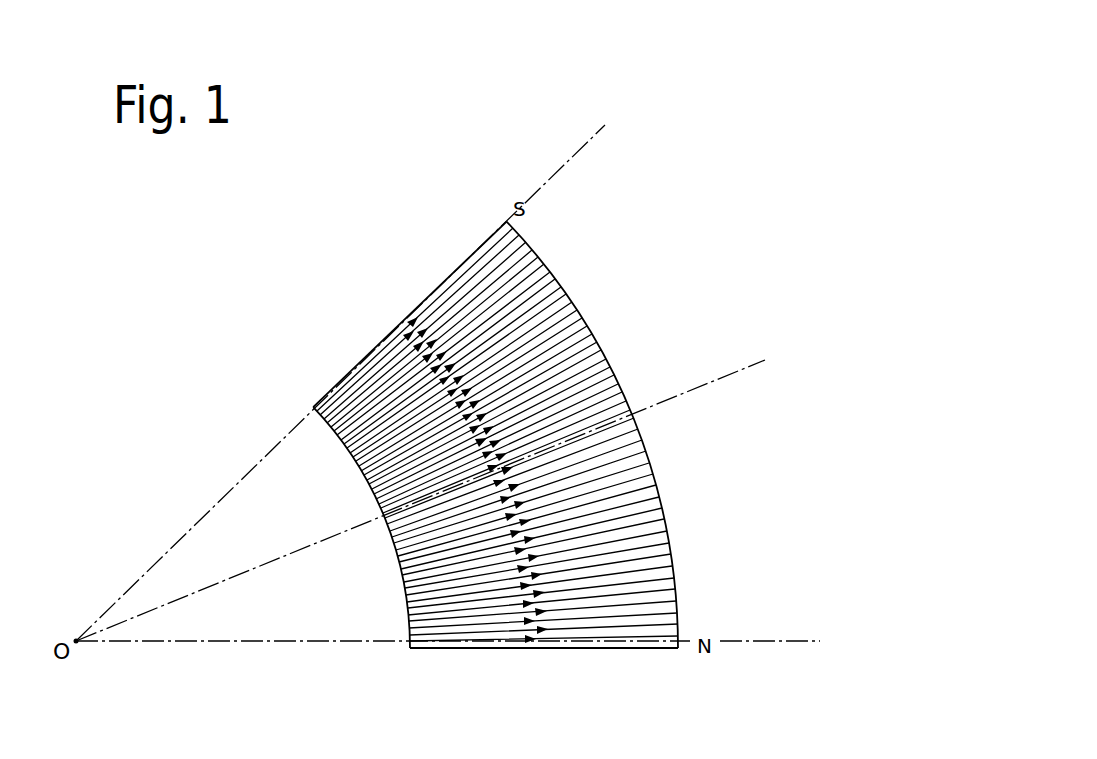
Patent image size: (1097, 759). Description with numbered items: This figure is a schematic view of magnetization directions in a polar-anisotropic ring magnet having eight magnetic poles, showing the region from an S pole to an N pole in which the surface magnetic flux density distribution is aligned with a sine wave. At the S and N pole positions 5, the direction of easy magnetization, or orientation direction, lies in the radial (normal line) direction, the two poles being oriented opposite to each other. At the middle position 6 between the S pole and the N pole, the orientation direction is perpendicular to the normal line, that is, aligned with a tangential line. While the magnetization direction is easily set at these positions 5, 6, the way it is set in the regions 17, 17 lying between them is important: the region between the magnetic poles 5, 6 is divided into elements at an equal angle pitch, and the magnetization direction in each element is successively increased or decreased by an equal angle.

The S and N pole positions 5 is at (505, 218).
The middle position between the magnetic poles 6 is at (656, 402).
The regions between the pole positions 17 is at (632, 407).